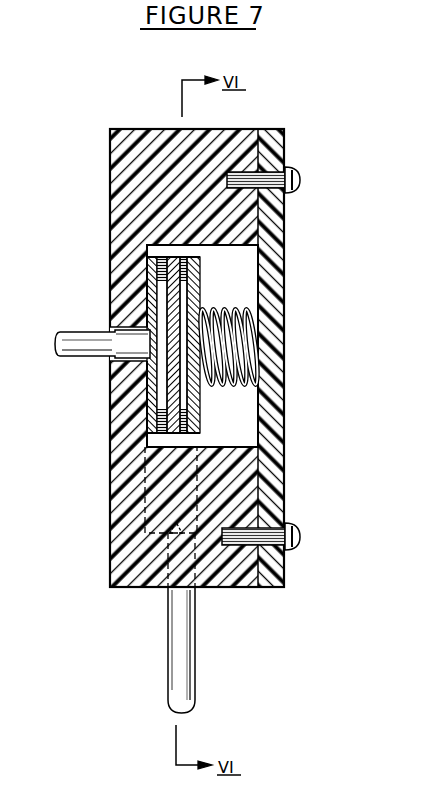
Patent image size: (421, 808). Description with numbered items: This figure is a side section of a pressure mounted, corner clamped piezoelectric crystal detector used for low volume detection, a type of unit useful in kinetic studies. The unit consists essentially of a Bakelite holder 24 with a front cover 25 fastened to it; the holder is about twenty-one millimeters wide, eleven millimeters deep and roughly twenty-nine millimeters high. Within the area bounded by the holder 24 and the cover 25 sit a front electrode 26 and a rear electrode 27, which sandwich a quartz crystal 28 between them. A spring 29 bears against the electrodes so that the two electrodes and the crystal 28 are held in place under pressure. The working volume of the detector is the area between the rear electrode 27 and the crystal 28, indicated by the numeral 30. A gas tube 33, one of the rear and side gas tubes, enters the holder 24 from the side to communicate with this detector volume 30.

The Bakelite holder 24 is at (112, 183).
The front cover 25 is at (274, 262).
The front electrode 26 is at (200, 270).
The rear electrode 27 is at (150, 278).
The quartz crystal 28 is at (176, 402).
The spring 29 is at (232, 318).
The detector volume 30 is at (160, 302).
The gas tube 33 is at (82, 352).